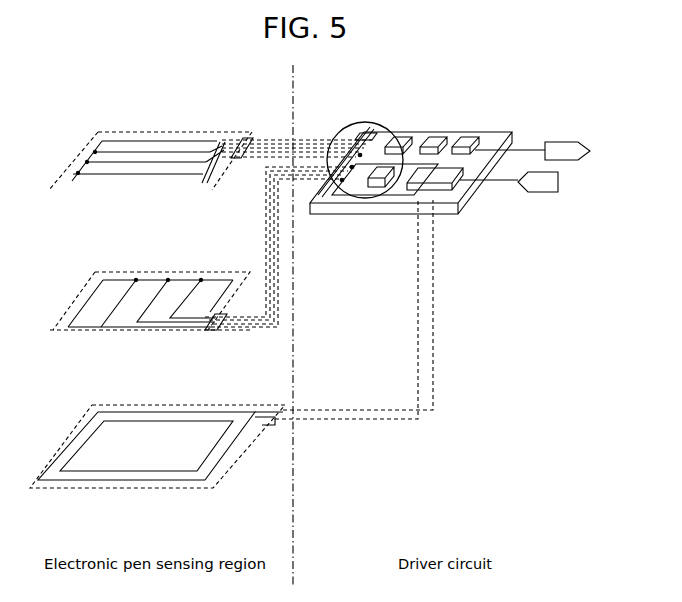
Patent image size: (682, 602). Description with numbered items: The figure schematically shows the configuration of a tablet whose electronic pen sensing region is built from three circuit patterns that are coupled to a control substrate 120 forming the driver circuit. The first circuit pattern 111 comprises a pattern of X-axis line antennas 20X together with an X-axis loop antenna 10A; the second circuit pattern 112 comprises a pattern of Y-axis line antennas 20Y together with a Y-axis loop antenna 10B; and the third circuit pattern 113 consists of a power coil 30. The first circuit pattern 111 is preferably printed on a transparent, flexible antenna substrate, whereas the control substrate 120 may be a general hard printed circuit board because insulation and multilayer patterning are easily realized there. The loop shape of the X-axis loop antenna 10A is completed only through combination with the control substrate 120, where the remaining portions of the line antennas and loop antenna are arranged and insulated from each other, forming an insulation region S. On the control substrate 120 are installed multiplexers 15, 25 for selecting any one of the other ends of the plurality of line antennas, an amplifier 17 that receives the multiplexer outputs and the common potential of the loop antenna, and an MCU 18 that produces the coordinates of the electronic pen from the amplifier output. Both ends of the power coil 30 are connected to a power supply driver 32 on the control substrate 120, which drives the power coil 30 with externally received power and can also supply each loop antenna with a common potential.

The Y-axis loop antenna 10B is at (155, 140).
The Y-axis line antennas 20Y is at (193, 152).
The second circuit pattern 112 is at (140, 192).
The X-axis loop antenna 10A is at (121, 279).
The X-axis line antennas 20X is at (118, 301).
The first circuit pattern 111 is at (133, 332).
The power coil 30 is at (104, 486).
The third circuit pattern 113 is at (183, 487).
The control substrate 120 is at (323, 211).
The insulation region S is at (375, 132).
The multiplexer 25 is at (403, 133).
The amplifier 17 is at (443, 133).
The MCU 18 is at (473, 134).
The multiplexer 15 is at (378, 190).
The power supply driver 32 is at (445, 192).